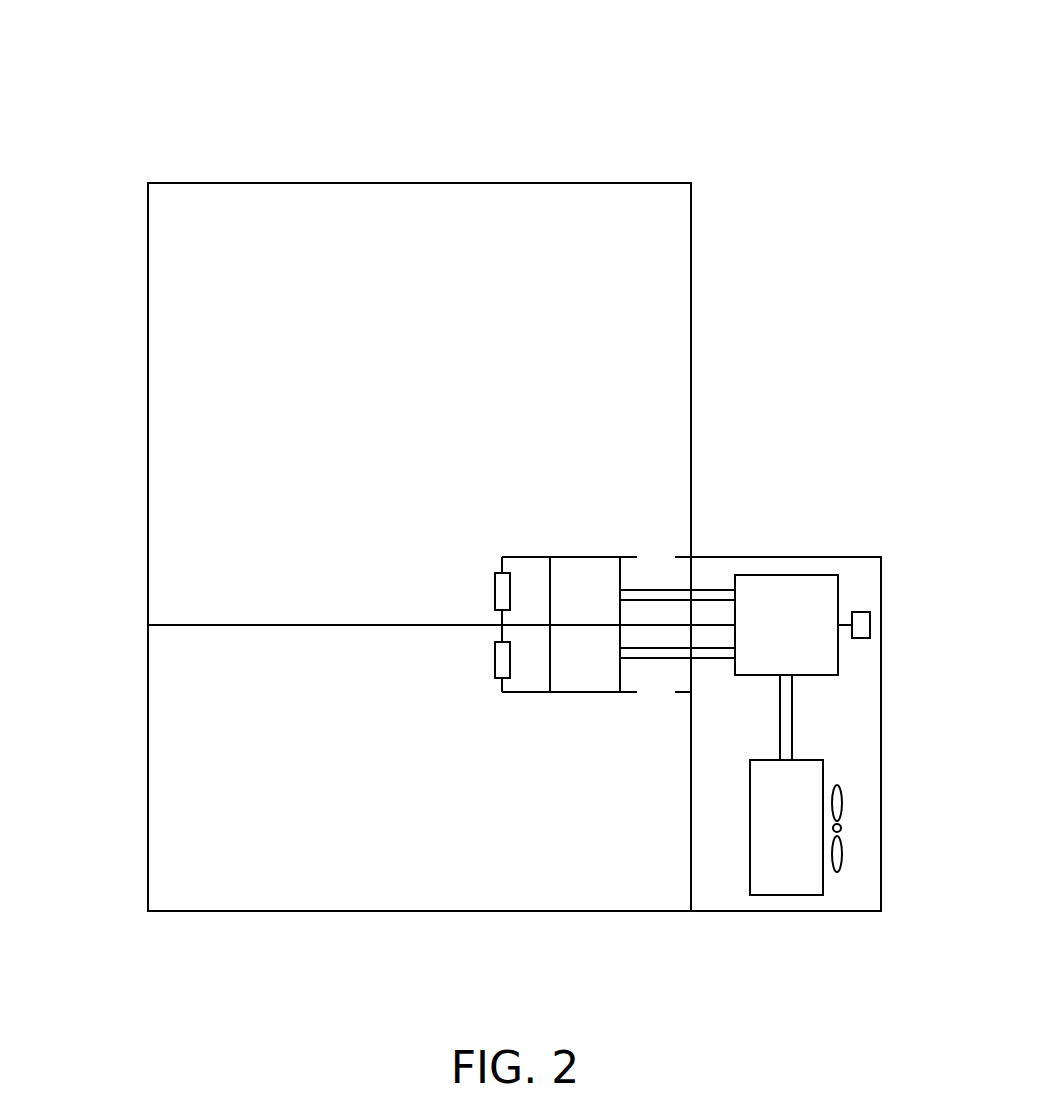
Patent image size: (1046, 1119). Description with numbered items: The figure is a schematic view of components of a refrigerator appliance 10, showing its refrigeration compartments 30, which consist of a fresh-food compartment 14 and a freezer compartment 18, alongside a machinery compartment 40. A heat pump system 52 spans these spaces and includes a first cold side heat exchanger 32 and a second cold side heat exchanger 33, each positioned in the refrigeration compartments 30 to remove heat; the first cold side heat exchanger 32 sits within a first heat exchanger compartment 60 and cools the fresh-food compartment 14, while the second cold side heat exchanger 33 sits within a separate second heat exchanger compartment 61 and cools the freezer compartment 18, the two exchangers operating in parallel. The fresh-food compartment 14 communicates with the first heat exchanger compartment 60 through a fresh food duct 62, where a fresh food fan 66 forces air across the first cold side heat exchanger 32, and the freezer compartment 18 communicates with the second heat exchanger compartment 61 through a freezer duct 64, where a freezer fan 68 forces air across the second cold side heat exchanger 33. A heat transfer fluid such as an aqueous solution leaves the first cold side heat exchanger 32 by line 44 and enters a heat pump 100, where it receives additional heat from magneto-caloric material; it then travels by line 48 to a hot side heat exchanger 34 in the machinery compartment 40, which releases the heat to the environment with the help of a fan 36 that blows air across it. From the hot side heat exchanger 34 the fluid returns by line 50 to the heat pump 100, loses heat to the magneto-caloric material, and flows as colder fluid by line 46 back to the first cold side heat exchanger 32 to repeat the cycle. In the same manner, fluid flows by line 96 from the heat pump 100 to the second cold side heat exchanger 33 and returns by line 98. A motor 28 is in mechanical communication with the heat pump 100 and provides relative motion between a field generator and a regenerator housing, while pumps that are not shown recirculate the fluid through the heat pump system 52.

The refrigerator appliance 10 is at (768, 72).
The fresh-food compartment 14 is at (657, 288).
The freezer compartment 18 is at (181, 829).
The motor 28 is at (858, 632).
The refrigeration compartments 30 is at (272, 218).
The first cold side heat exchanger 32 is at (572, 590).
The second cold side heat exchanger 33 is at (582, 667).
The hot side heat exchanger 34 is at (787, 868).
The fan 36 is at (843, 828).
The machinery compartment 40 is at (853, 717).
The line 44 is at (705, 588).
The line 46 is at (678, 598).
The line 48 is at (780, 737).
The line 50 is at (792, 745).
The heat pump system 52 is at (852, 580).
The first heat exchanger compartment 60 is at (528, 590).
The second heat exchanger compartment 61 is at (528, 672).
The fresh food duct 62 is at (498, 557).
The freezer duct 64 is at (500, 680).
The fresh food fan 66 is at (498, 590).
The freezer fan 68 is at (495, 662).
The line 96 is at (708, 660).
The line 98 is at (703, 648).
The heat pump 100 is at (778, 598).